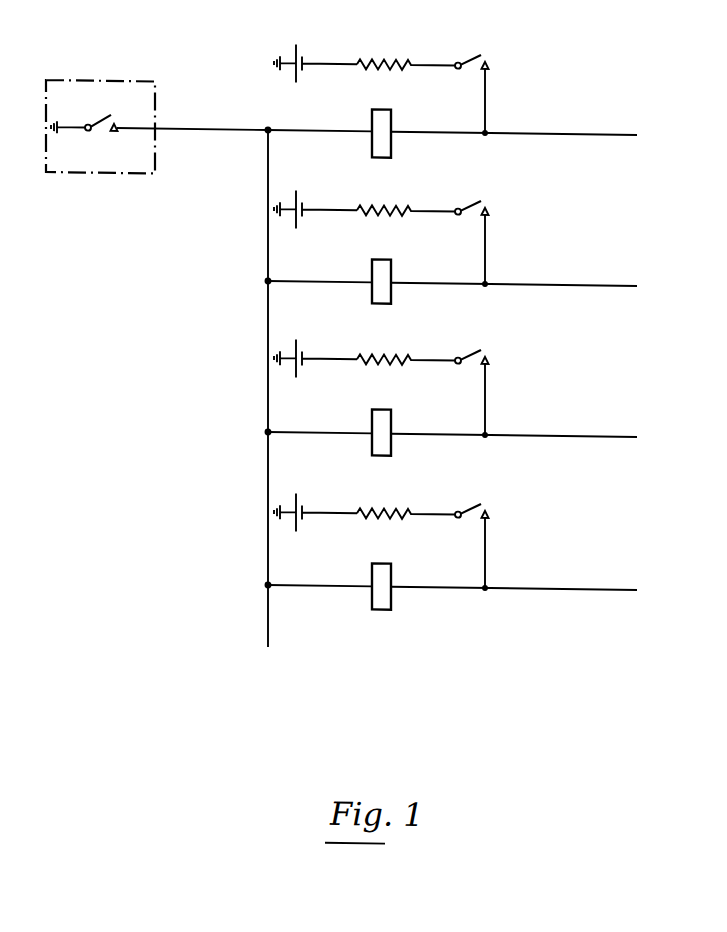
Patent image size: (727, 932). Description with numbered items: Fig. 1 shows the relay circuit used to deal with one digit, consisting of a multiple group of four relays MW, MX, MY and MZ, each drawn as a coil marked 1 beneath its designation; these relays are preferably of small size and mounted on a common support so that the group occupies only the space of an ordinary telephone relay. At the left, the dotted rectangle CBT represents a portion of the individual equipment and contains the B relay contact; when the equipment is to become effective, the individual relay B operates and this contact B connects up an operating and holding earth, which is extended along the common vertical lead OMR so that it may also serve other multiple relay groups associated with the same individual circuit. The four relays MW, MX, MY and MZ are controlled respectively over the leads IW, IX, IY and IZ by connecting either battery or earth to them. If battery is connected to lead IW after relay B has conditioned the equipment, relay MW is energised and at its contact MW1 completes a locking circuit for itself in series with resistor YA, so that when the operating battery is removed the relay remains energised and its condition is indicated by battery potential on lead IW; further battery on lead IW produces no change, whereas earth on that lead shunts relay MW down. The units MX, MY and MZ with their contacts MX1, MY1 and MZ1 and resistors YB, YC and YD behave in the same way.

The B relay contact B is at (159, 116).
The dotted rectangle CBT is at (100, 126).
The lead OMR is at (268, 633).
The resistor YA is at (364, 60).
The resistor YB is at (364, 206).
The resistor YC is at (364, 355).
The resistor YD is at (364, 509).
The relay MW is at (398, 90).
The relay MX is at (398, 240).
The relay MY is at (398, 390).
The relay MZ is at (398, 544).
The contact MW1 is at (467, 86).
The contact MX1 is at (467, 234).
The contact MY1 is at (467, 384).
The contact MZ1 is at (467, 538).
The lead IW is at (452, 124).
The lead IX is at (452, 275).
The lead IY is at (452, 426).
The lead IZ is at (452, 579).
The relay coil contact number 1 is at (382, 326).